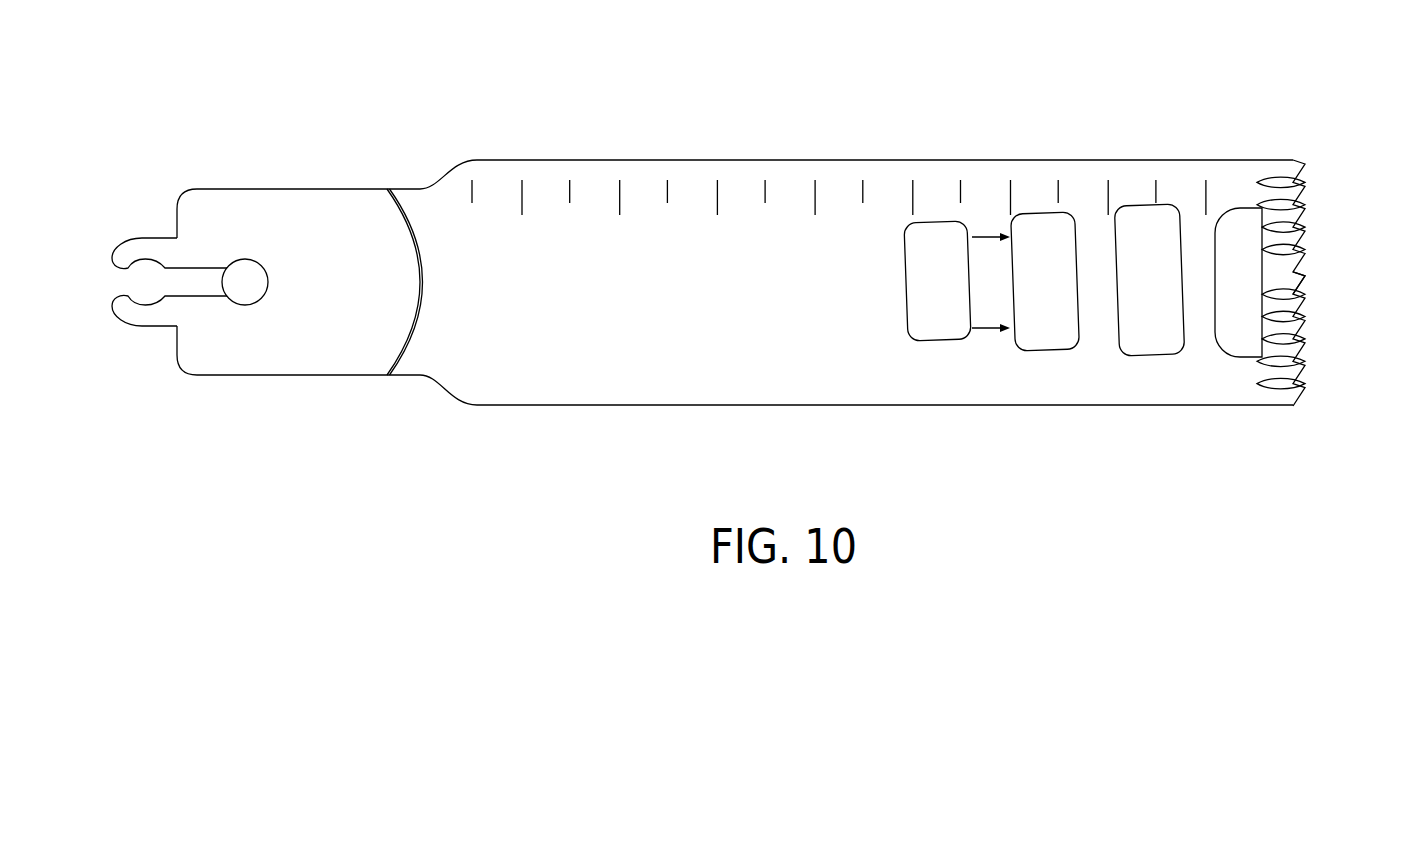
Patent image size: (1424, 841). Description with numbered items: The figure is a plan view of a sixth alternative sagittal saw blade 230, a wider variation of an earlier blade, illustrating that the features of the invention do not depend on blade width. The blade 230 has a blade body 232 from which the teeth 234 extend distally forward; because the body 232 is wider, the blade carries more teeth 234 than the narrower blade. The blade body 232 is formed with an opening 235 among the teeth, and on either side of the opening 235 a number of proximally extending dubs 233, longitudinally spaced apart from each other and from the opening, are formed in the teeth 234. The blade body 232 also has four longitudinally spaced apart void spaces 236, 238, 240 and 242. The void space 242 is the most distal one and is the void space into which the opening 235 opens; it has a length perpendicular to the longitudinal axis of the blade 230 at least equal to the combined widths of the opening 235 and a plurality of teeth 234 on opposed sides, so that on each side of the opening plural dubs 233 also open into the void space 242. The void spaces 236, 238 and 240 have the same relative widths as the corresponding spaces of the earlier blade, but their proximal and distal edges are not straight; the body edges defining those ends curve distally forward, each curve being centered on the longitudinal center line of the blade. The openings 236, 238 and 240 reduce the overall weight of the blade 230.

The blade 230 is at (556, 102).
The blade body 232 is at (587, 371).
The dubs 233 is at (1300, 204).
The teeth 234 is at (1305, 208).
The opening 235 is at (1282, 287).
The void space 236 is at (942, 262).
The void space 238 is at (1060, 257).
The void space 240 is at (1162, 242).
The void space 242 is at (1232, 335).